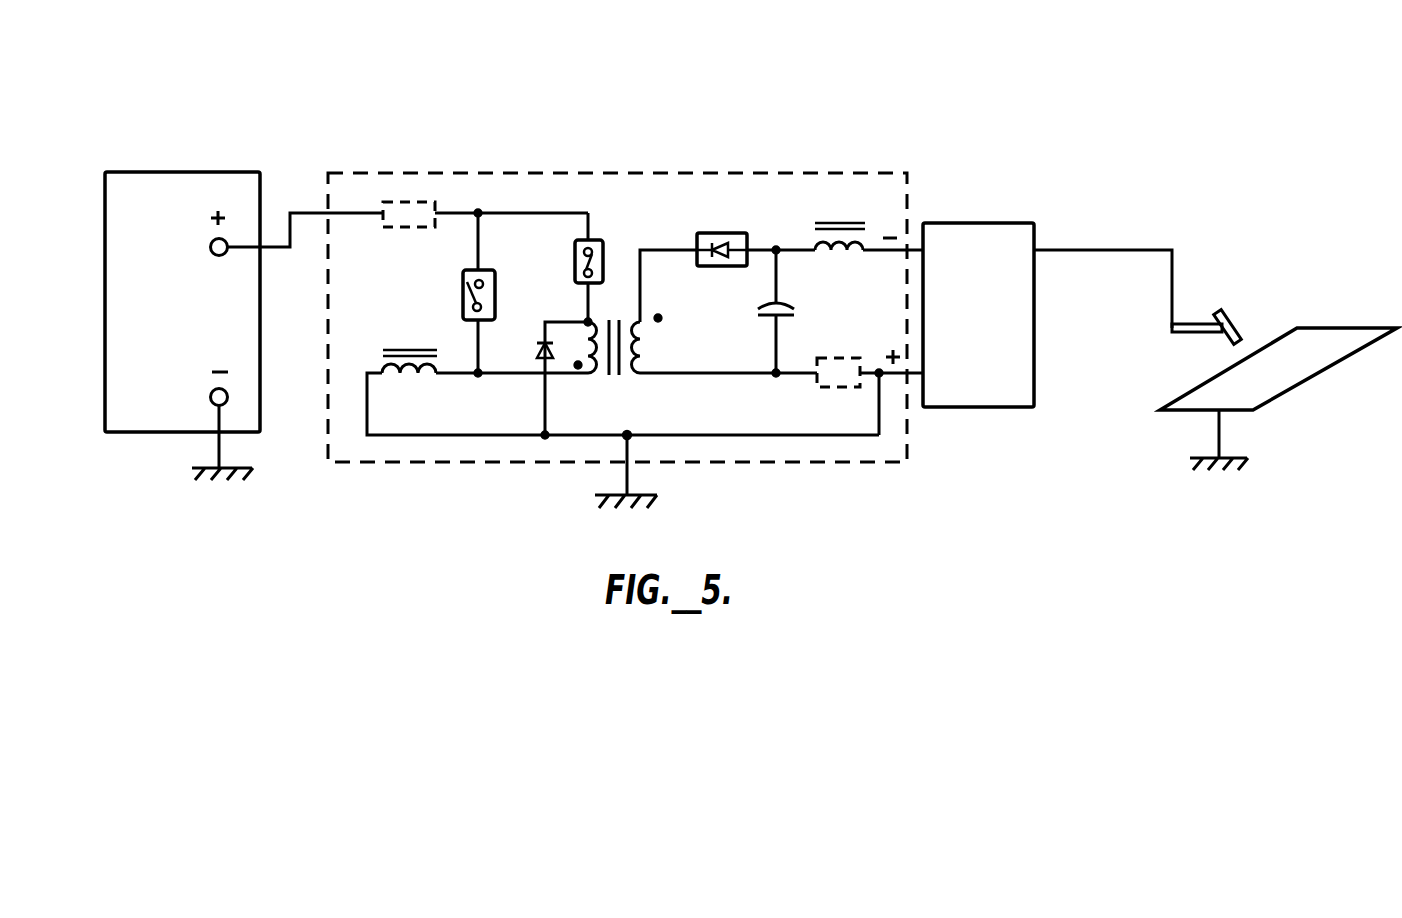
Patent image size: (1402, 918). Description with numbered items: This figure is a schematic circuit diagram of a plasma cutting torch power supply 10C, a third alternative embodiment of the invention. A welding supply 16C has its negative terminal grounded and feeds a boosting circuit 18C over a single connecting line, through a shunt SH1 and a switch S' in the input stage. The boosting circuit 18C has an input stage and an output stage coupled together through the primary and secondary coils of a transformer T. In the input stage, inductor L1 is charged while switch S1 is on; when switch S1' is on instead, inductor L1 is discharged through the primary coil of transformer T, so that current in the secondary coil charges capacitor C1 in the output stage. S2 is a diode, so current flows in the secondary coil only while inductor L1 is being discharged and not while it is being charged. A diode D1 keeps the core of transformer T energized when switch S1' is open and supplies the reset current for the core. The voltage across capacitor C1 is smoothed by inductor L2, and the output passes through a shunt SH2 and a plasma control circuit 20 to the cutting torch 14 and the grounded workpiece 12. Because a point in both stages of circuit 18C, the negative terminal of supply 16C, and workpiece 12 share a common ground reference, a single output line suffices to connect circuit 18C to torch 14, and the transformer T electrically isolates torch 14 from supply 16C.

The plasma cutting torch power supply 10C is at (300, 46).
The supply 16C is at (223, 172).
The boosting circuit 18C is at (718, 171).
The plasma control circuit 20 is at (988, 222).
The cutting torch 14 is at (1221, 312).
The workpiece 12 is at (1168, 412).
The shunt SH1 is at (409, 230).
The switch S' is at (492, 295).
The switch S1' is at (572, 267).
The inductor L1 is at (409, 348).
The diode D1 is at (551, 378).
The transformer T is at (618, 360).
The diode S2 is at (722, 236).
The capacitor C1 is at (789, 311).
The inductor L2 is at (840, 223).
The shunt SH2 is at (838, 359).